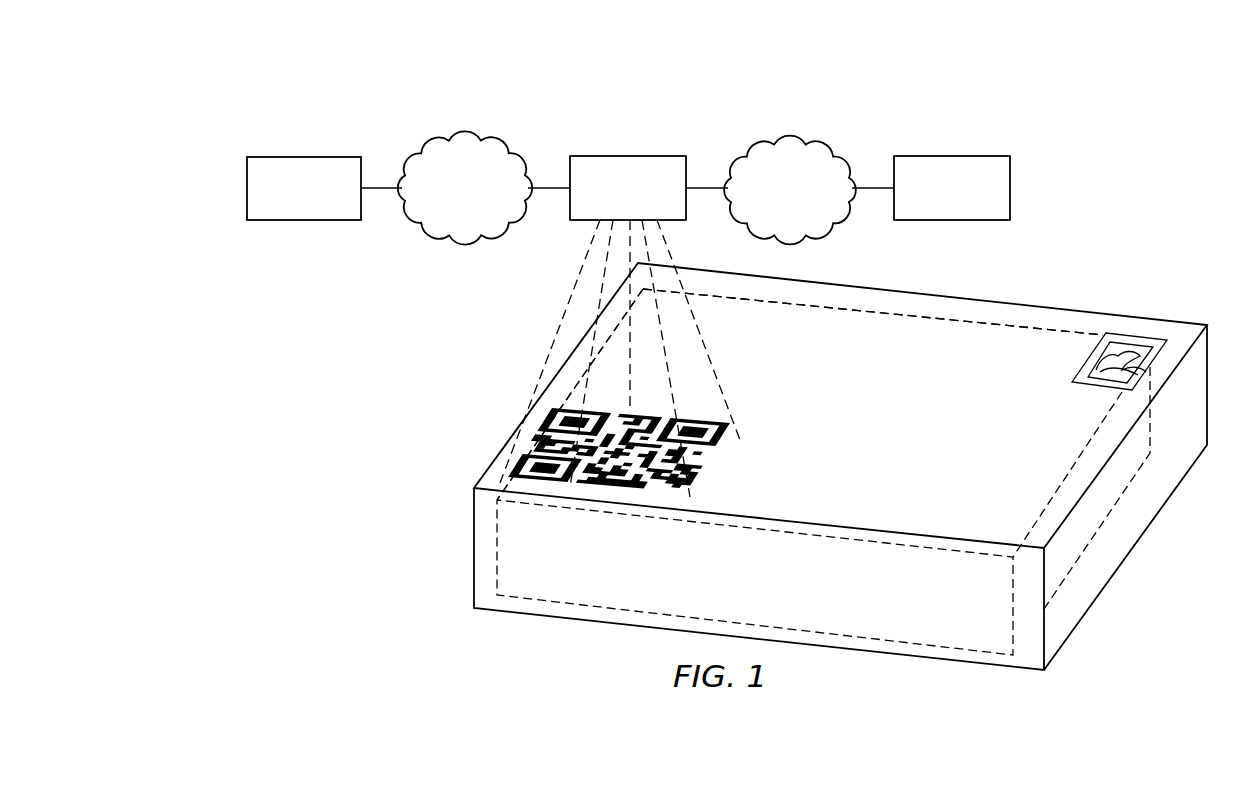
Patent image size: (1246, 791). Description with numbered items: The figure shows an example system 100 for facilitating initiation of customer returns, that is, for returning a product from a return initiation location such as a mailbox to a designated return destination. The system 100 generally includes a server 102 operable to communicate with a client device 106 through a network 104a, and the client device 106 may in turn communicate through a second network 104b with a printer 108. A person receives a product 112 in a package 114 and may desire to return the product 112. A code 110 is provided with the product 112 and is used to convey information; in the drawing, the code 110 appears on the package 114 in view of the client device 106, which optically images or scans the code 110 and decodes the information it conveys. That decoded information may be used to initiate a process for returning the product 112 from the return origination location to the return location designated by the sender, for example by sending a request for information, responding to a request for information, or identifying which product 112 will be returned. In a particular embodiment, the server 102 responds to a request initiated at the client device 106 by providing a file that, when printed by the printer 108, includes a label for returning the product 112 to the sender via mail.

The system 100 is at (580, 57).
The server 102 is at (301, 157).
The network 104a is at (461, 134).
The network 104b is at (794, 138).
The client device 106 is at (626, 156).
The printer 108 is at (954, 156).
The code 110 is at (729, 461).
The product 112 is at (1002, 347).
The package 114 is at (1074, 291).